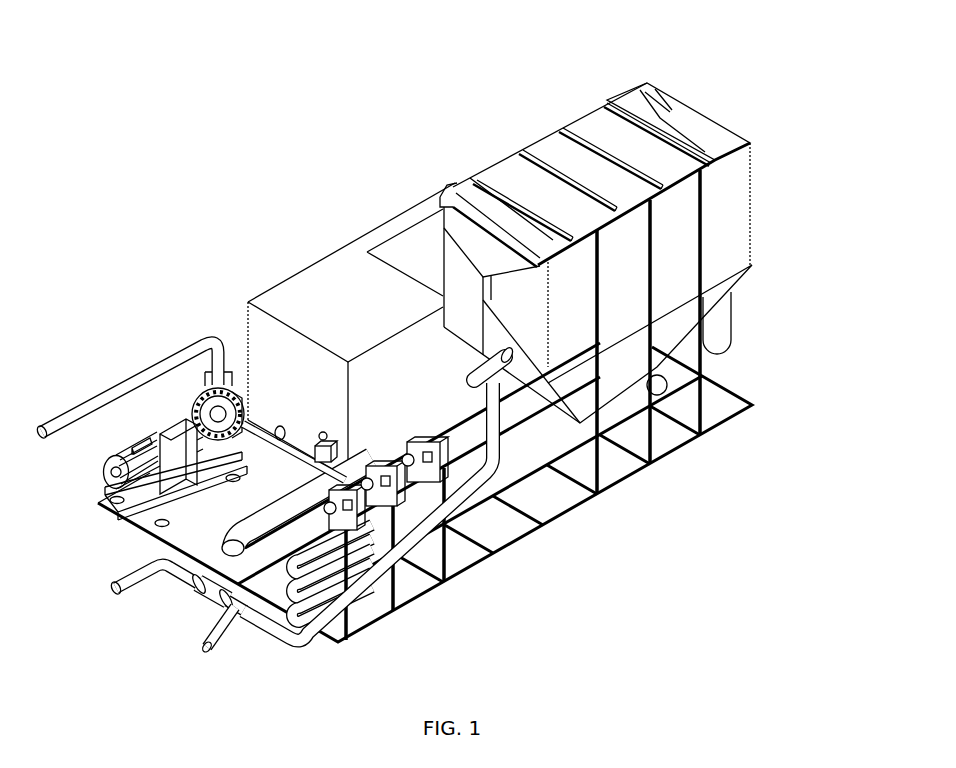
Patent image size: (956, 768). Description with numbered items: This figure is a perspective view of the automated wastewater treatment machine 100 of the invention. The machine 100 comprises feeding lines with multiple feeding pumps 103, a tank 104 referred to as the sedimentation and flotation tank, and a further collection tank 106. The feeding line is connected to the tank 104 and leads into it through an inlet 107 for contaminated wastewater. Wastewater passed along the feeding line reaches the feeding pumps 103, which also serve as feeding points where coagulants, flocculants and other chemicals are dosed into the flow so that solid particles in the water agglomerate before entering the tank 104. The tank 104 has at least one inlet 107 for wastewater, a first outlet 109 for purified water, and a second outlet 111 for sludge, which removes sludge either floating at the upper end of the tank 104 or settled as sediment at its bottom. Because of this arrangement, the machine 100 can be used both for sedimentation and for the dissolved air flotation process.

The machine 100 is at (475, 93).
The feeding pumps 103 is at (350, 522).
The tank 104 is at (692, 117).
The collection tank 106 is at (323, 277).
The inlet 107 is at (127, 585).
The first outlet 109 is at (155, 367).
The second outlet 111 is at (220, 642).